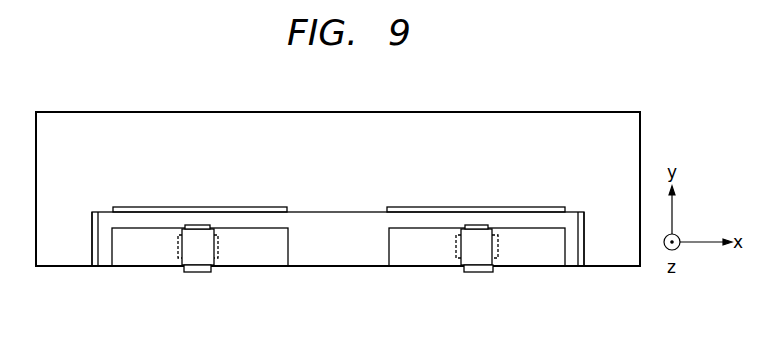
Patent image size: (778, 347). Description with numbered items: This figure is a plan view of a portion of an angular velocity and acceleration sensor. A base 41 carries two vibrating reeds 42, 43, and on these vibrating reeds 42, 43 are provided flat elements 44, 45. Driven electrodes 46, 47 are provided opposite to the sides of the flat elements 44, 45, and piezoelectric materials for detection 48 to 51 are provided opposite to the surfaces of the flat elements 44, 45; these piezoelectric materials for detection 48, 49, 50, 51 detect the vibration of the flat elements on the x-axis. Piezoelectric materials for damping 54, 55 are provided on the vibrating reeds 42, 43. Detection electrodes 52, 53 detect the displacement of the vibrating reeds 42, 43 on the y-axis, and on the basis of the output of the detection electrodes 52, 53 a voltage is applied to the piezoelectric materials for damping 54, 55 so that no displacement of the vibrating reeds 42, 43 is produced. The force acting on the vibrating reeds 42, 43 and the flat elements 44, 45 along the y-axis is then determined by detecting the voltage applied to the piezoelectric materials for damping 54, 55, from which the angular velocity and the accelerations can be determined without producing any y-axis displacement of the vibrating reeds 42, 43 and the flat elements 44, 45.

The base 41 is at (565, 123).
The vibrating reed 42 is at (200, 236).
The vibrating reed 43 is at (478, 237).
The flat element 44 is at (263, 258).
The flat element 45 is at (405, 253).
The driven electrode 46 is at (92, 240).
The driven electrode 47 is at (583, 242).
The piezoelectric material for detection 48 is at (180, 238).
The piezoelectric material for detection 49 is at (502, 245).
The piezoelectric material for detection 50 is at (222, 250).
The piezoelectric material for detection 51 is at (457, 245).
The detection electrode 52 is at (247, 206).
The detection electrode 53 is at (408, 206).
The piezoelectric material for damping 54 is at (200, 237).
The piezoelectric material for damping 55 is at (487, 222).